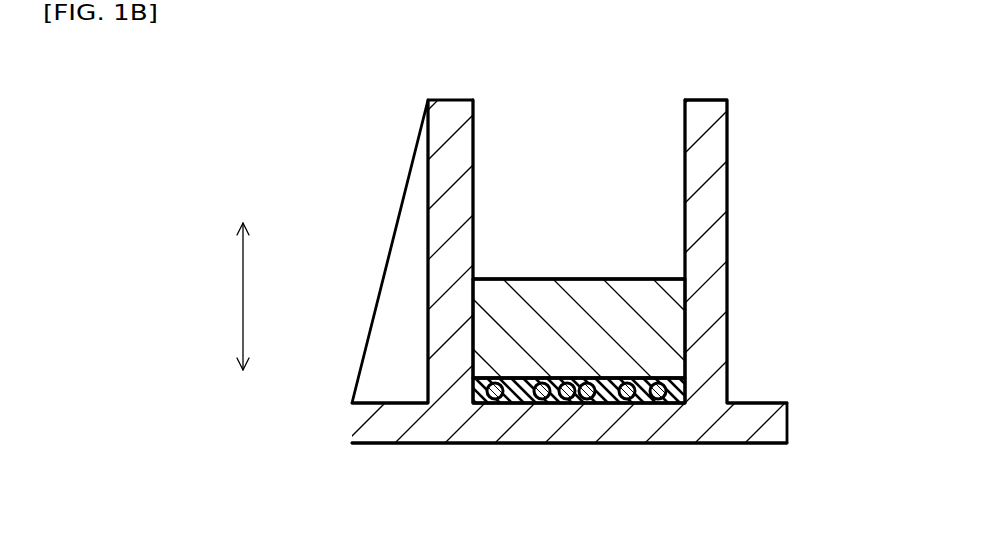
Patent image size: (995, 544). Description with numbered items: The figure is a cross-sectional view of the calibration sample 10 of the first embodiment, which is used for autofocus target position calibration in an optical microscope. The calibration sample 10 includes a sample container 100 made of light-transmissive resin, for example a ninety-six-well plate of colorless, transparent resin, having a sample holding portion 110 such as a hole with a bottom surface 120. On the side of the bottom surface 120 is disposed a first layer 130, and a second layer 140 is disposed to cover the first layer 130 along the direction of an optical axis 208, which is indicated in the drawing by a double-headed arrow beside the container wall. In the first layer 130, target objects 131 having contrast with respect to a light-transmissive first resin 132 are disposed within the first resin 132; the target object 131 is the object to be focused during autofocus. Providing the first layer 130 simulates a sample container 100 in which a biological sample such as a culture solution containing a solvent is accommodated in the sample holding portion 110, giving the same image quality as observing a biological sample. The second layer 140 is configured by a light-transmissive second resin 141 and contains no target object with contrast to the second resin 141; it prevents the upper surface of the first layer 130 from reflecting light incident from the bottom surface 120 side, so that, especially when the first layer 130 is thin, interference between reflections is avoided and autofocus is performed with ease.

The calibration sample 10 is at (793, 103).
The sample container 100 is at (685, 445).
The sample holding portion 110 is at (580, 157).
The bottom surface 120 is at (523, 403).
The first layer 130 is at (530, 429).
The target object 131 is at (498, 403).
The first resin 132 is at (608, 403).
The second layer 140 is at (515, 321).
The second resin 141 is at (515, 321).
The optical axis 208 is at (243, 295).